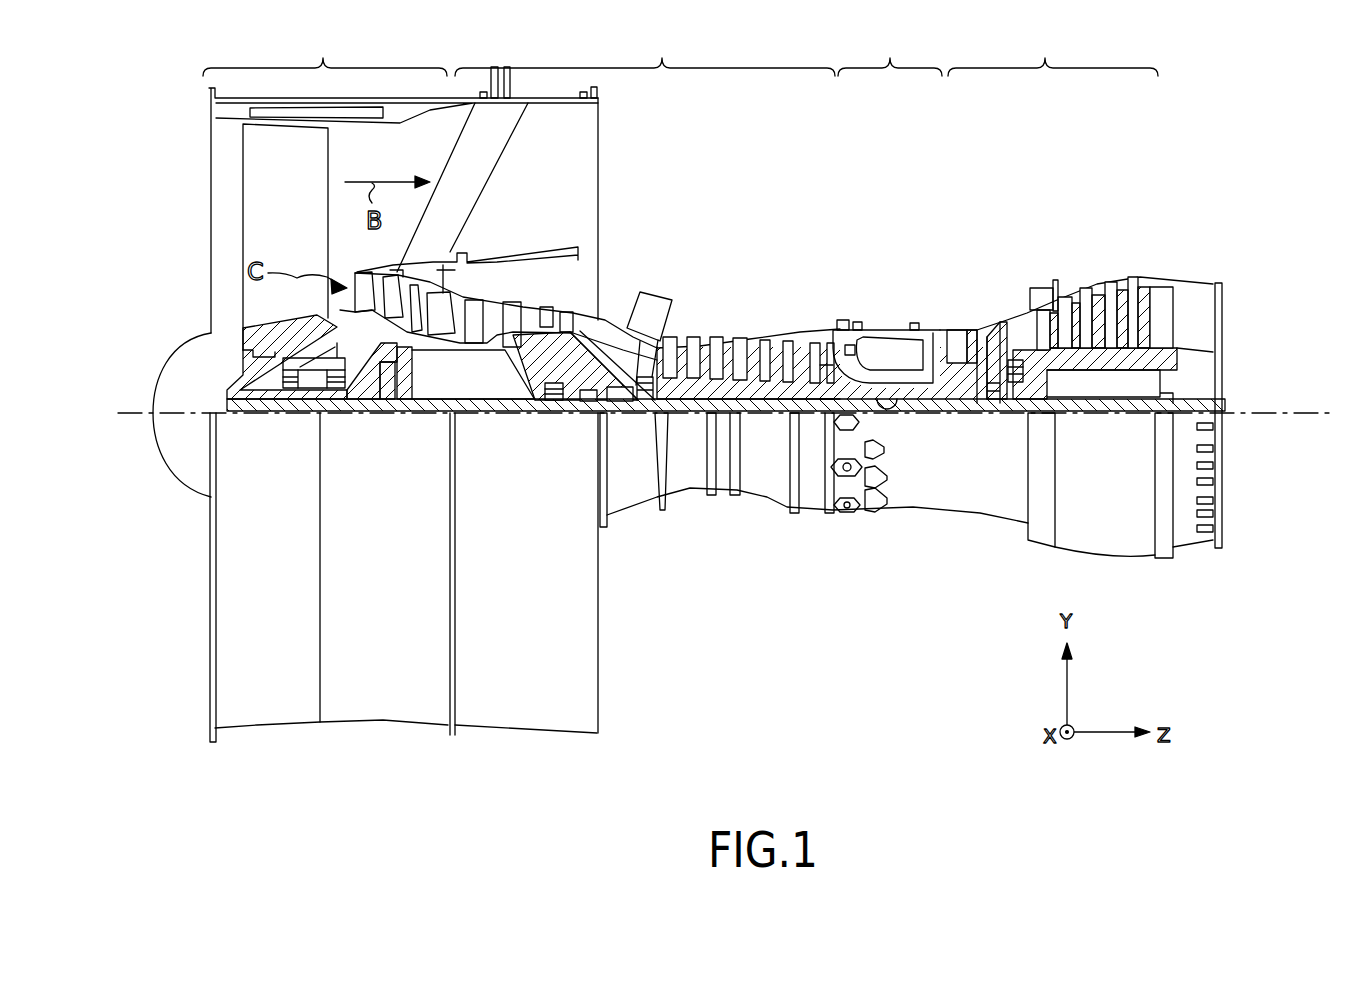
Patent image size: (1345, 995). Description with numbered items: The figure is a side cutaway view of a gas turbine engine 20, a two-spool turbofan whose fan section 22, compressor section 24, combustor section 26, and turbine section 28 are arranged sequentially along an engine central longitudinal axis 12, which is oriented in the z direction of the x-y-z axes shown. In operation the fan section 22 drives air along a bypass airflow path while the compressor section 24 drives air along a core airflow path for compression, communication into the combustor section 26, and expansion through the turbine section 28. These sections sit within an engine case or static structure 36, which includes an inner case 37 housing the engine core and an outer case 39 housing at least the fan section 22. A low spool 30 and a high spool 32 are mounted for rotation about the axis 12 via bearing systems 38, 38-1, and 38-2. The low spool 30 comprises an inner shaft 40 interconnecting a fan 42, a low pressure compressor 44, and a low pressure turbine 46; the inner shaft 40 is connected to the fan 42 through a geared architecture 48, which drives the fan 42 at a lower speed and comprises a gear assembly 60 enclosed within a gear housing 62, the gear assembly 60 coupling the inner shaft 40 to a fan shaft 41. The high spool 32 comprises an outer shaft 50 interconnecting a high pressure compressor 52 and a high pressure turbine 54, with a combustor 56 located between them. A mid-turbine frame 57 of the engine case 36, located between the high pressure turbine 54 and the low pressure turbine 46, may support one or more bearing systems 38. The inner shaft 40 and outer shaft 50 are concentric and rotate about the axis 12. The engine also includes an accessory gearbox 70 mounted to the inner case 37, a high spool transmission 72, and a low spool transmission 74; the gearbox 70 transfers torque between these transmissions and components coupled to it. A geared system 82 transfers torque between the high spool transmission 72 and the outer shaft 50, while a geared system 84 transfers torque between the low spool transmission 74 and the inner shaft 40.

The engine central longitudinal axis 12 is at (125, 408).
The gas turbine engine 20 is at (1166, 163).
The fan section 22 is at (325, 55).
The compressor section 24 is at (645, 55).
The combustor section 26 is at (890, 55).
The turbine section 28 is at (1053, 55).
The low spool 30 is at (772, 440).
The high spool 32 is at (813, 378).
The engine case 36 is at (636, 576).
The inner case 37 is at (813, 487).
The bearing system 38 is at (998, 405).
The bearing system 38-1 is at (291, 389).
The bearing system 38-2 is at (553, 401).
The outer case 39 is at (508, 705).
The inner shaft 40 is at (683, 415).
The fan shaft 41 is at (342, 403).
The fan 42 is at (292, 212).
The low pressure compressor 44 is at (517, 307).
The low pressure turbine 46 is at (1093, 297).
The geared architecture 48 is at (403, 443).
The outer shaft 50 is at (890, 402).
The high pressure compressor 52 is at (786, 337).
The high pressure turbine 54 is at (947, 338).
The combustor 56 is at (893, 343).
The mid-turbine frame 57 is at (1007, 318).
The gear assembly 60 is at (427, 372).
The gear housing 62 is at (428, 350).
The accessory gearbox 70 is at (657, 310).
The high spool transmission 72 is at (650, 357).
The low spool transmission 74 is at (617, 345).
The geared system 82 is at (620, 417).
The geared system 84 is at (583, 403).